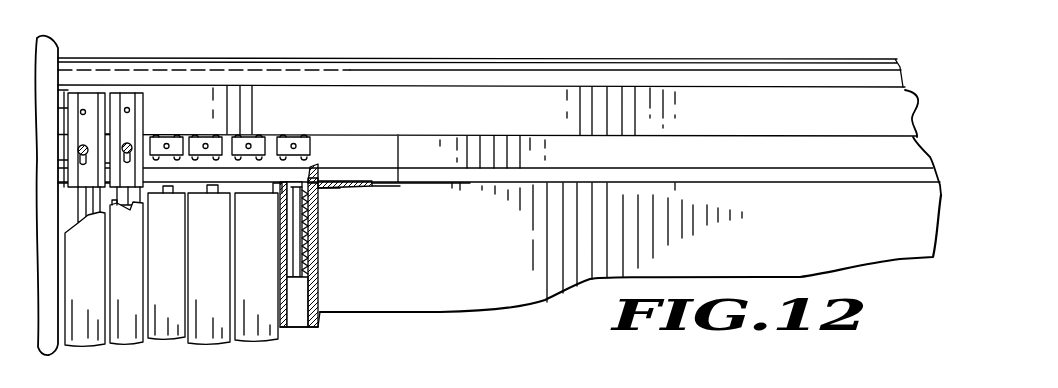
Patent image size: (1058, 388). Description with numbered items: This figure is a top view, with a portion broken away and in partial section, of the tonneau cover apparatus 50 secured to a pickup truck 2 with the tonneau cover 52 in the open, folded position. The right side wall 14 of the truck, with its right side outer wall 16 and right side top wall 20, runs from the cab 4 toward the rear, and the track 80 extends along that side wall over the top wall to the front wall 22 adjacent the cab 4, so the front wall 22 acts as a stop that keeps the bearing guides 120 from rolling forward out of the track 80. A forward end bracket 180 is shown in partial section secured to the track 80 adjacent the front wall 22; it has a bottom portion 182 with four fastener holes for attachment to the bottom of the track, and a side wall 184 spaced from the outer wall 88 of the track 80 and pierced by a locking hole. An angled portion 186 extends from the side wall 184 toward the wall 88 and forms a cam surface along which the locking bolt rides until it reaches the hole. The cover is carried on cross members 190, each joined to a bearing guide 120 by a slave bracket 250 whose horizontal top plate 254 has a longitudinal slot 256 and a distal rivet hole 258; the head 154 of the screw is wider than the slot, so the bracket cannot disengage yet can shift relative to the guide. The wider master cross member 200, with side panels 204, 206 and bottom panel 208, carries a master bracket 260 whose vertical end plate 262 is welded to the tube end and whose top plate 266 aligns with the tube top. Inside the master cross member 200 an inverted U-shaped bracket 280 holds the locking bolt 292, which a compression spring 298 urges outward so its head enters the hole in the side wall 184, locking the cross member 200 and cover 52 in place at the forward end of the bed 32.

The pickup truck 2 is at (60, 40).
The cab 4 is at (52, 357).
The right side wall 14 is at (499, 108).
The right side outer wall 16 is at (605, 58).
The right side top wall 20 is at (468, 72).
The front wall 22 is at (65, 90).
The bed 32 is at (475, 291).
The tonneau cover apparatus 50 is at (324, 331).
The tonneau cover 52 is at (173, 277).
The track 80 is at (469, 184).
The outer wall of the track 88 is at (677, 184).
The bearing guide 120 is at (277, 134).
The head of the screw 154 is at (146, 382).
The forward end bracket 180 is at (380, 197).
The bottom portion 182 is at (338, 187).
The side wall 184 is at (328, 190).
The angled portion 186 is at (380, 183).
The cross member 190 is at (188, 198).
The master cross member 200 is at (310, 268).
The side panel 204 is at (280, 336).
The side panel 206 is at (320, 287).
The bottom panel 208 is at (300, 328).
The slave bracket 250 is at (136, 120).
The horizontal top plate 254 is at (138, 127).
The slot 256 is at (128, 141).
The rivet hole 258 is at (128, 108).
The master bracket 260 is at (322, 172).
The vertical end plate 262 is at (279, 210).
The top plate 266 is at (318, 170).
The bracket 280 is at (284, 302).
The locking bolt 292 is at (320, 258).
The compression spring 298 is at (280, 242).